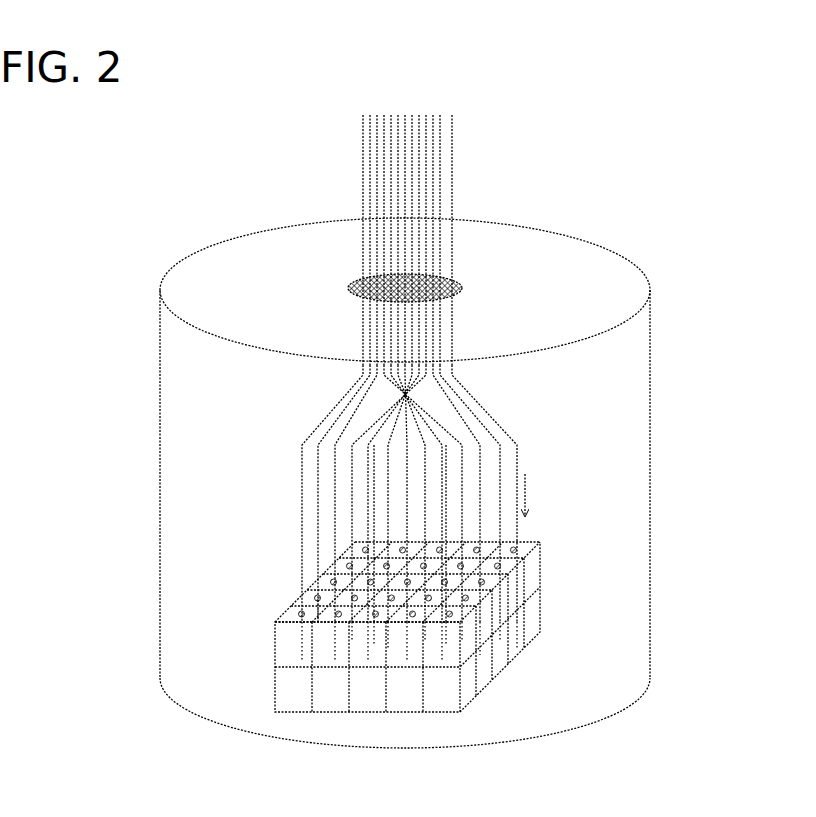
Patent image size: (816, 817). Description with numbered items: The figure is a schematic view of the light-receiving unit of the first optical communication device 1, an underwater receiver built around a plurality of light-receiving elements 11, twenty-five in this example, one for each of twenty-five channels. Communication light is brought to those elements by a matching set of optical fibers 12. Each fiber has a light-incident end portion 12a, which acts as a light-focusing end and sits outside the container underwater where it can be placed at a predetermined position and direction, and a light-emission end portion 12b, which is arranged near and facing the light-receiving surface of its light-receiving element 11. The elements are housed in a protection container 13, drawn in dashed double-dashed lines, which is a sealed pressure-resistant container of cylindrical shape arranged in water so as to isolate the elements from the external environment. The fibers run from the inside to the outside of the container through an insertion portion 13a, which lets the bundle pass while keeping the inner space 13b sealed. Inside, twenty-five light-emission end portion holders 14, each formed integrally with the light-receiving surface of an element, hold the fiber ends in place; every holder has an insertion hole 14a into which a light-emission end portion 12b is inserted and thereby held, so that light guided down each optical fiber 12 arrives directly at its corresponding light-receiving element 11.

The first optical communication device 1 is at (98, 213).
The light-receiving element 11 is at (535, 618).
The optical fiber 12 is at (497, 420).
The light-incident end portion 12a is at (455, 143).
The light-emission end portion 12b is at (535, 591).
The protection container 13 is at (650, 345).
The insertion portion 13a is at (462, 290).
The inner space 13b is at (612, 425).
The light-emission end portion holder 14 is at (535, 572).
The insertion hole 14a is at (522, 540).